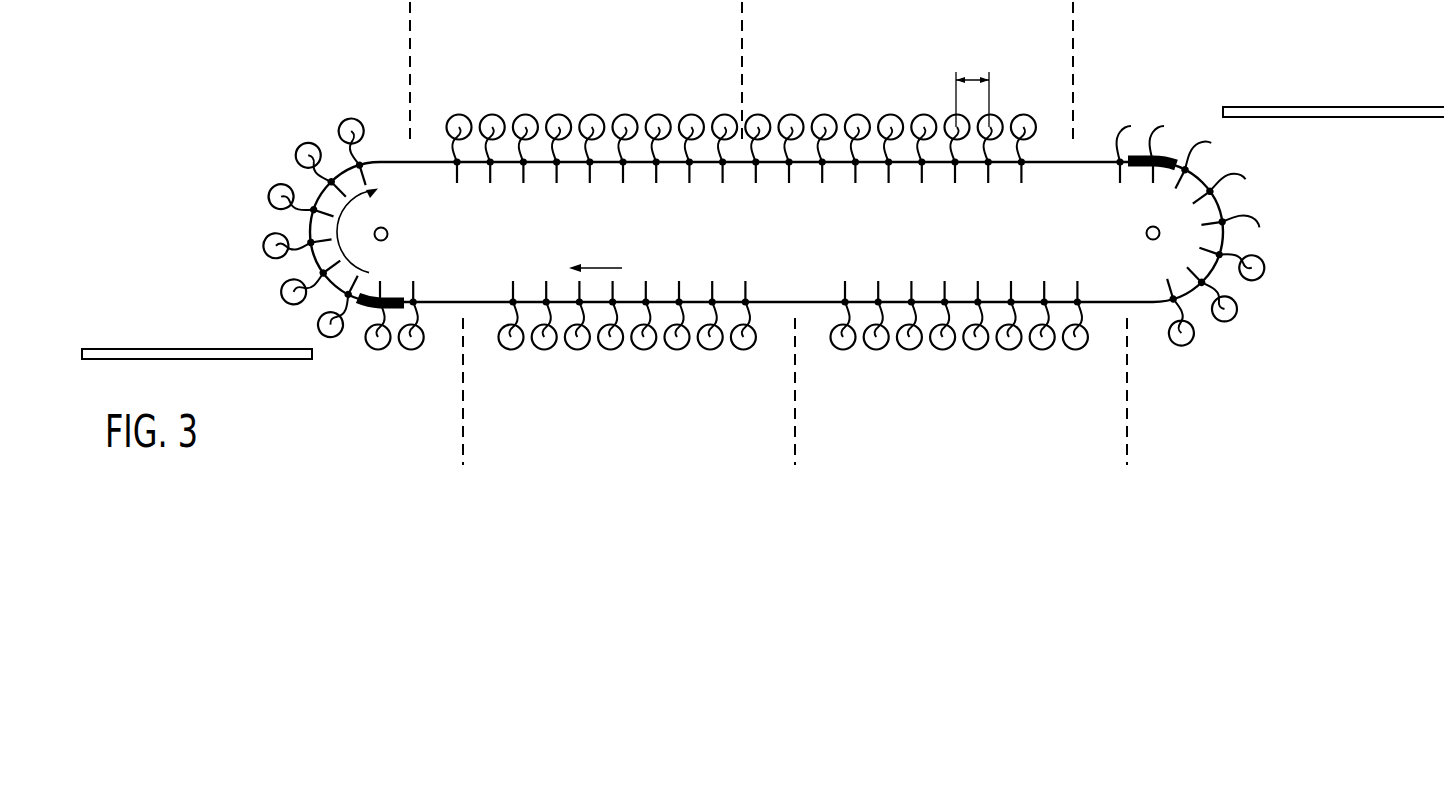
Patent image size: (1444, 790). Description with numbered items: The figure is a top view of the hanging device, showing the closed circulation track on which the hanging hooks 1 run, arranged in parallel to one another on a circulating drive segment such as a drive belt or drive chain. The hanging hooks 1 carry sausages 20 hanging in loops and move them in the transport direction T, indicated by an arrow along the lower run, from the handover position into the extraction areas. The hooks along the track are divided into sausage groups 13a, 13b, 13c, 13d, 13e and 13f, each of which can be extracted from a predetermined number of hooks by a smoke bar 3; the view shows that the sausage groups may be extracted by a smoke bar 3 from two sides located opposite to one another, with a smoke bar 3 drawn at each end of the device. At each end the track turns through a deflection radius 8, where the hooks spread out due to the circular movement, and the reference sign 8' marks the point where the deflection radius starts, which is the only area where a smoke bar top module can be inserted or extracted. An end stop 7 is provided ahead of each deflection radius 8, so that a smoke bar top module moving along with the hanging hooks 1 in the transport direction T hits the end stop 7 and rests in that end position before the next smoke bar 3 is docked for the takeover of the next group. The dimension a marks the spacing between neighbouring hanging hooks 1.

The hanging hook 1 is at (600, 116).
The smoke bar 3 is at (123, 348).
The end stop 7 is at (363, 306).
The deflection radius 8 is at (298, 228).
The start of the deflection radius 8' is at (394, 241).
The sausage 20 is at (375, 320).
The pitch spacing a is at (972, 89).
The transport direction T is at (595, 255).
The sausage group 13a is at (555, 391).
The sausage group 13b is at (961, 391).
The sausage group 13c is at (1290, 163).
The sausage group 13d is at (907, 74).
The sausage group 13e is at (502, 74).
The conveyor section 13f is at (214, 181).